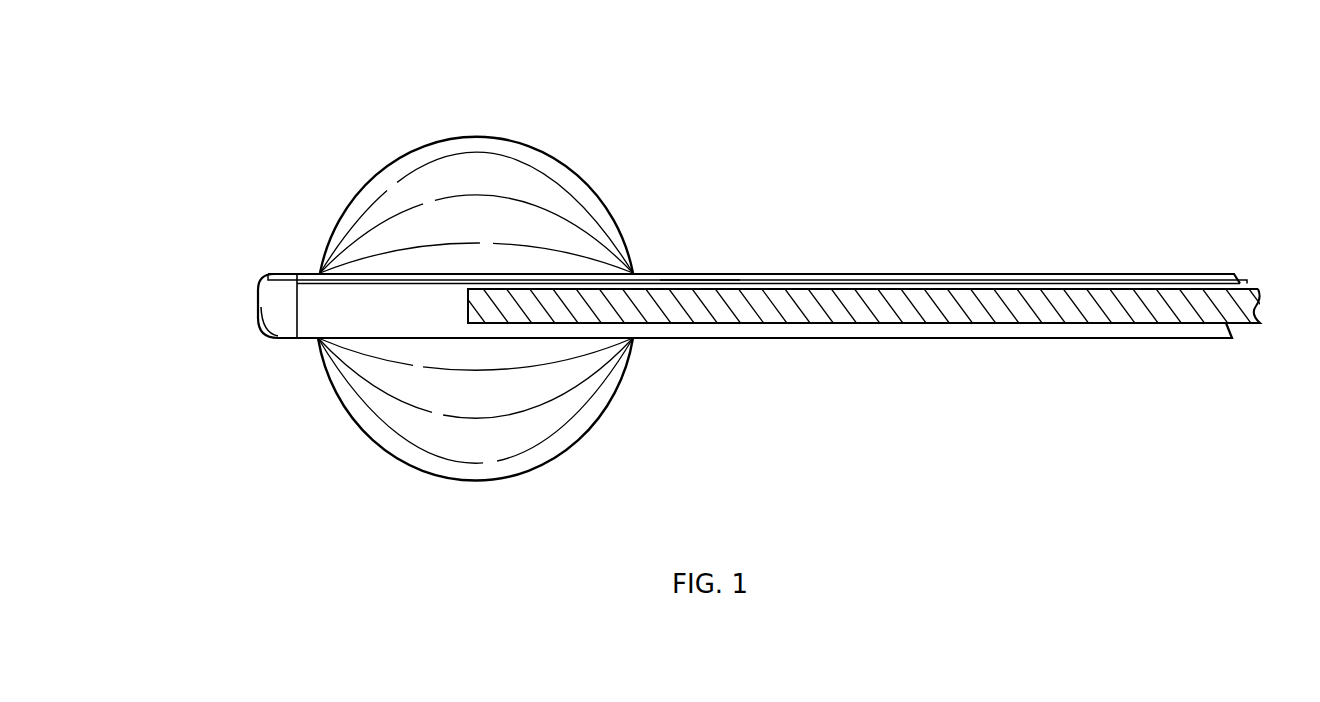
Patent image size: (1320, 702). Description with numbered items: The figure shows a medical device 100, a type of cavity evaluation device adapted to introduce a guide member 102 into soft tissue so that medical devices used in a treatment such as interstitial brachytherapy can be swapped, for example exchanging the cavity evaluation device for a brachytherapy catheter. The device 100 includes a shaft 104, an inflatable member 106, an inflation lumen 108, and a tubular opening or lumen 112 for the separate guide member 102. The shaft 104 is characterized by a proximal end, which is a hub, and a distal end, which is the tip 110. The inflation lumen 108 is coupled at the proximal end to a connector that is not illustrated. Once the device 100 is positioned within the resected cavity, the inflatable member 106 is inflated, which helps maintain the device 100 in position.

The medical device 100 is at (218, 46).
The guide member 102 is at (276, 259).
The shaft 104 is at (835, 273).
The inflatable member 106 is at (577, 432).
The inflation lumen 108 is at (950, 323).
The tip 110 is at (259, 313).
The tubular opening or lumen 112 is at (695, 269).